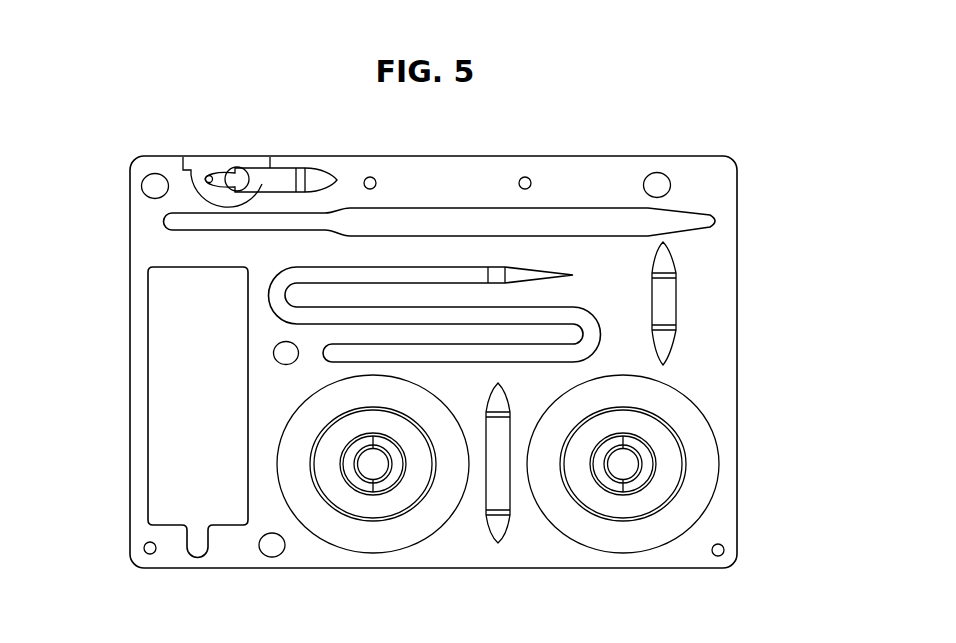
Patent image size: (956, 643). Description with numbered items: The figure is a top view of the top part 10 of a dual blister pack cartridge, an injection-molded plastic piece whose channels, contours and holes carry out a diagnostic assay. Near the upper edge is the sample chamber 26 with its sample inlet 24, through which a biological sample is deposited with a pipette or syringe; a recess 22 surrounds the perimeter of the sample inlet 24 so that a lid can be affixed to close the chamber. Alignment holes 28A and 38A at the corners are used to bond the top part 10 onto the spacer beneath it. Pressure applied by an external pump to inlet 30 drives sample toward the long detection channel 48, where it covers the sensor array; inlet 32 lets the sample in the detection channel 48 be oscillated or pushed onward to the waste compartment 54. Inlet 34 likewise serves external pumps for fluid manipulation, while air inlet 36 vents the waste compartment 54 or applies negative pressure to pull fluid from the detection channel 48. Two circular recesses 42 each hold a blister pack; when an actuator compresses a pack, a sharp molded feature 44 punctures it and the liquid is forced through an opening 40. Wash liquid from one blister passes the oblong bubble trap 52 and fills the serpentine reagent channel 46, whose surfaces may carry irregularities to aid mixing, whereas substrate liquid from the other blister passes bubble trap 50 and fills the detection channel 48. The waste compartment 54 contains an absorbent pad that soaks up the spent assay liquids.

The top part 10 is at (598, 178).
The recess 22 is at (205, 168).
The sample inlet 24 is at (236, 176).
The sample chamber 26 is at (287, 180).
The alignment hole 28A is at (366, 178).
The inlet 30 is at (150, 182).
The inlet 32 is at (660, 180).
The inlet 34 is at (272, 354).
The air inlet 36 is at (260, 545).
The alignment hole 38A is at (145, 551).
The opening 40 is at (360, 464).
The recess 42 is at (418, 524).
The sharp molded feature 44 is at (378, 479).
The reagent channel 46 is at (562, 307).
The detection channel 48 is at (550, 215).
The bubble trap 50 is at (674, 300).
The bubble trap 52 is at (495, 481).
The waste compartment 54 is at (205, 440).